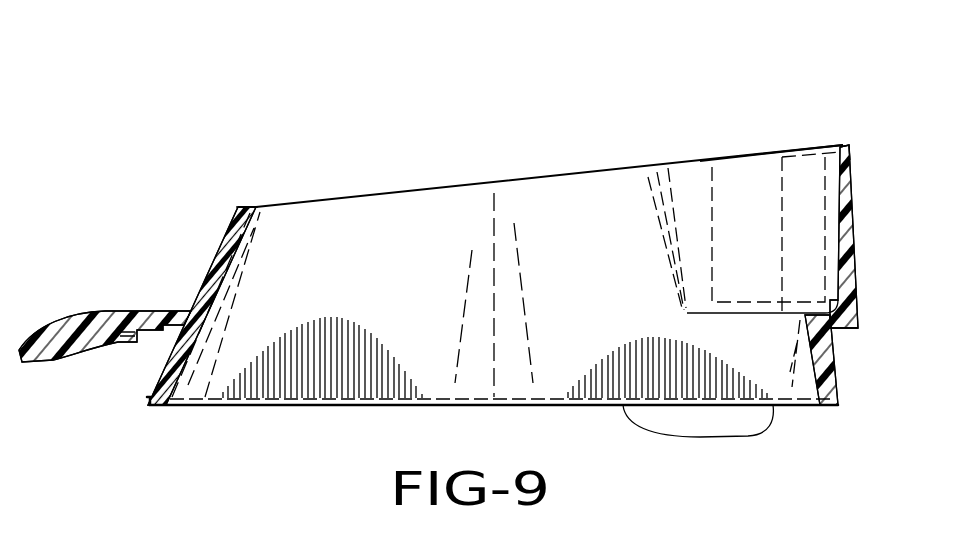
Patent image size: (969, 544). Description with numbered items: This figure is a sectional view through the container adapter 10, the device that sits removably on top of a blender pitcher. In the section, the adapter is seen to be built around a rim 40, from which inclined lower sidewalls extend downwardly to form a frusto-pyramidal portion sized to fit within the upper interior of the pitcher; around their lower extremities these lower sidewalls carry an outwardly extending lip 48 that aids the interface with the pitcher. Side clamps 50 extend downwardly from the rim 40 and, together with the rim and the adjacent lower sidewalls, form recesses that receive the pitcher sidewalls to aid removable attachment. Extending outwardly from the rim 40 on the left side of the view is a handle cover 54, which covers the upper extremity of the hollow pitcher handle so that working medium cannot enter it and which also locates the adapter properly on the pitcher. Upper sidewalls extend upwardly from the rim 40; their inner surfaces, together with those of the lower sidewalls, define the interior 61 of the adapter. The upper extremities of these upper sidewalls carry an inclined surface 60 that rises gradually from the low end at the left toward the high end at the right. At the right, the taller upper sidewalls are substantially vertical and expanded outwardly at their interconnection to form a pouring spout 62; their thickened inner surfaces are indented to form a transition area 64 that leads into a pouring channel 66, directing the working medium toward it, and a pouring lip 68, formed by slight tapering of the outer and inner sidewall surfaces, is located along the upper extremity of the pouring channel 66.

The container adapter 10 is at (145, 130).
The rim 40 is at (842, 320).
The outwardly extending lip 48 is at (148, 408).
The side clamps 50 is at (692, 422).
The handle cover 54 is at (62, 330).
The inclined surface 60 is at (247, 208).
The interior 61 is at (428, 214).
The pouring spout 62 is at (809, 132).
The transition area 64 is at (737, 192).
The pouring channel 66 is at (833, 225).
The pouring lip 68 is at (853, 170).